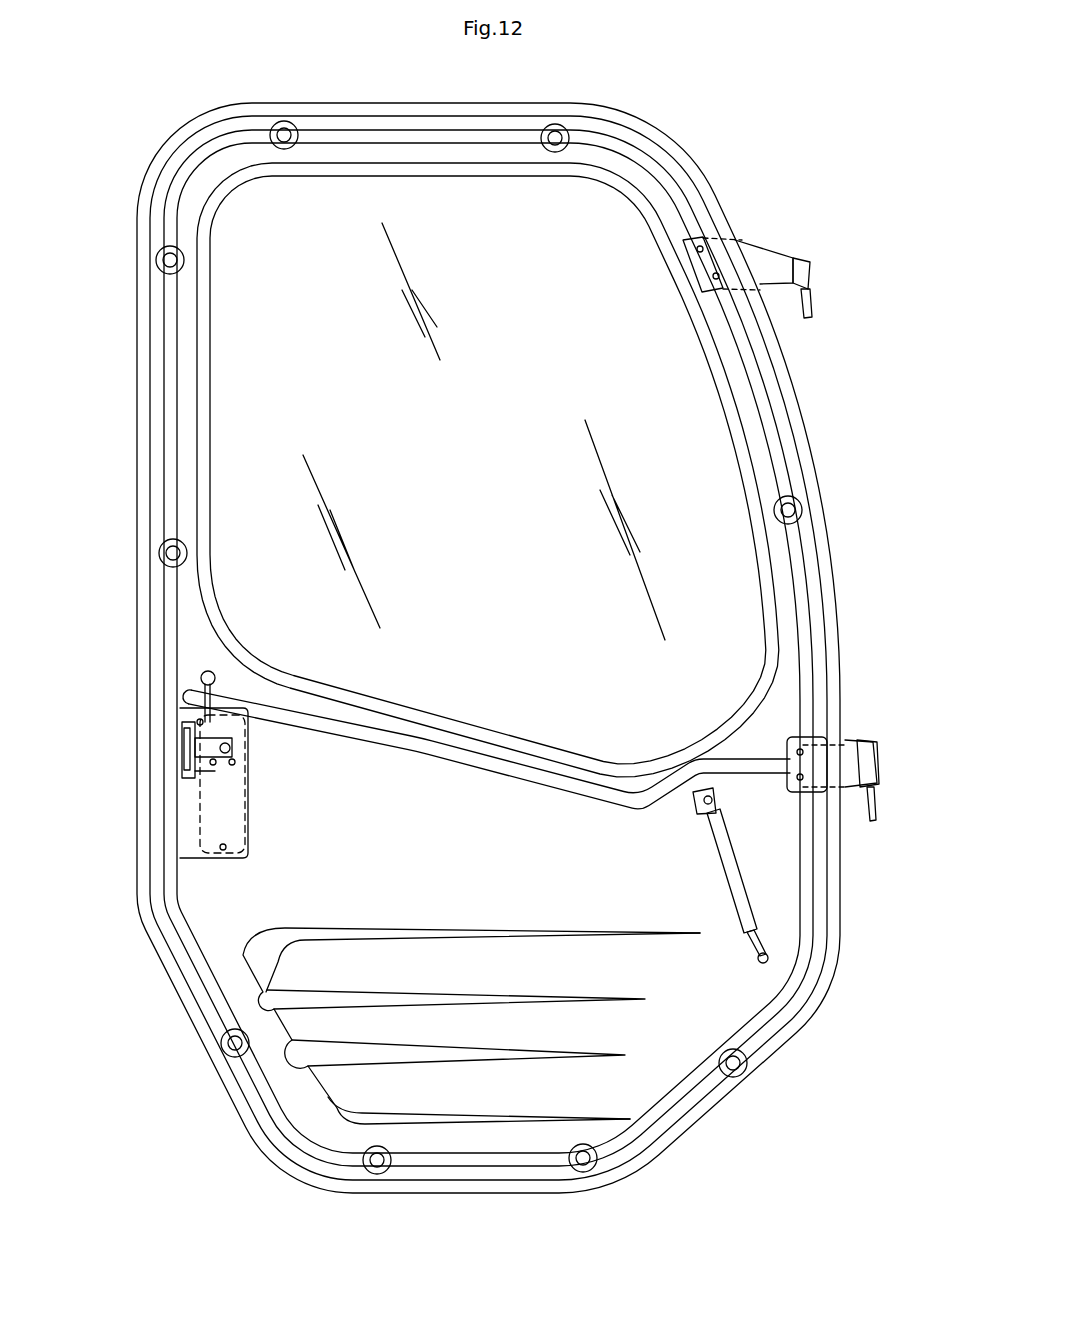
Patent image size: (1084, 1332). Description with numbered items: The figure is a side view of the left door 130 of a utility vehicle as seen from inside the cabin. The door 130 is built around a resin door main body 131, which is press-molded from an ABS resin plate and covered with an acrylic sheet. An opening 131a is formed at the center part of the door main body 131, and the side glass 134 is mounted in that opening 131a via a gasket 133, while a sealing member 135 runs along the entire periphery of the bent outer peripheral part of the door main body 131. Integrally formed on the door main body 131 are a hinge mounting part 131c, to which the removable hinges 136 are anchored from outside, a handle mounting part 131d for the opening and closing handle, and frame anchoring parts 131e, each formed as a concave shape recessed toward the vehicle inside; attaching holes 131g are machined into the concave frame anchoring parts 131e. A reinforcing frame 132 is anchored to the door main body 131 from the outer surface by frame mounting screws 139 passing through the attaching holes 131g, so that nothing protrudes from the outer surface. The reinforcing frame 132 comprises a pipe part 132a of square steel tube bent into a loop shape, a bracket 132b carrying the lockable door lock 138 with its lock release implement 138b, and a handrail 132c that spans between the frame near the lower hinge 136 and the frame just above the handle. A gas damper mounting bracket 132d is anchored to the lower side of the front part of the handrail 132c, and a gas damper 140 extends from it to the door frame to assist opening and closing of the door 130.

The door 130 is at (731, 150).
The door main body 131 is at (771, 877).
The opening 131a is at (415, 225).
The hinge mounting part 131c is at (720, 290).
The handle mounting part 131d is at (252, 742).
The frame anchoring parts 131e is at (562, 127).
The attaching holes 131g is at (286, 120).
The reinforcing frame 132 is at (198, 163).
The pipe part 132a is at (795, 1002).
The bracket 132b is at (248, 822).
The handrail 132c is at (470, 762).
The gas damper mounting bracket 132d is at (695, 806).
The gasket 133 is at (735, 421).
The side glass 134 is at (488, 415).
The sealing member 135 is at (826, 548).
The hinges 136 is at (762, 258).
The door lock 138 is at (196, 772).
The lock release implement 138b is at (212, 673).
The frame mounting screws 139 is at (453, 650).
The gas damper 140 is at (736, 882).